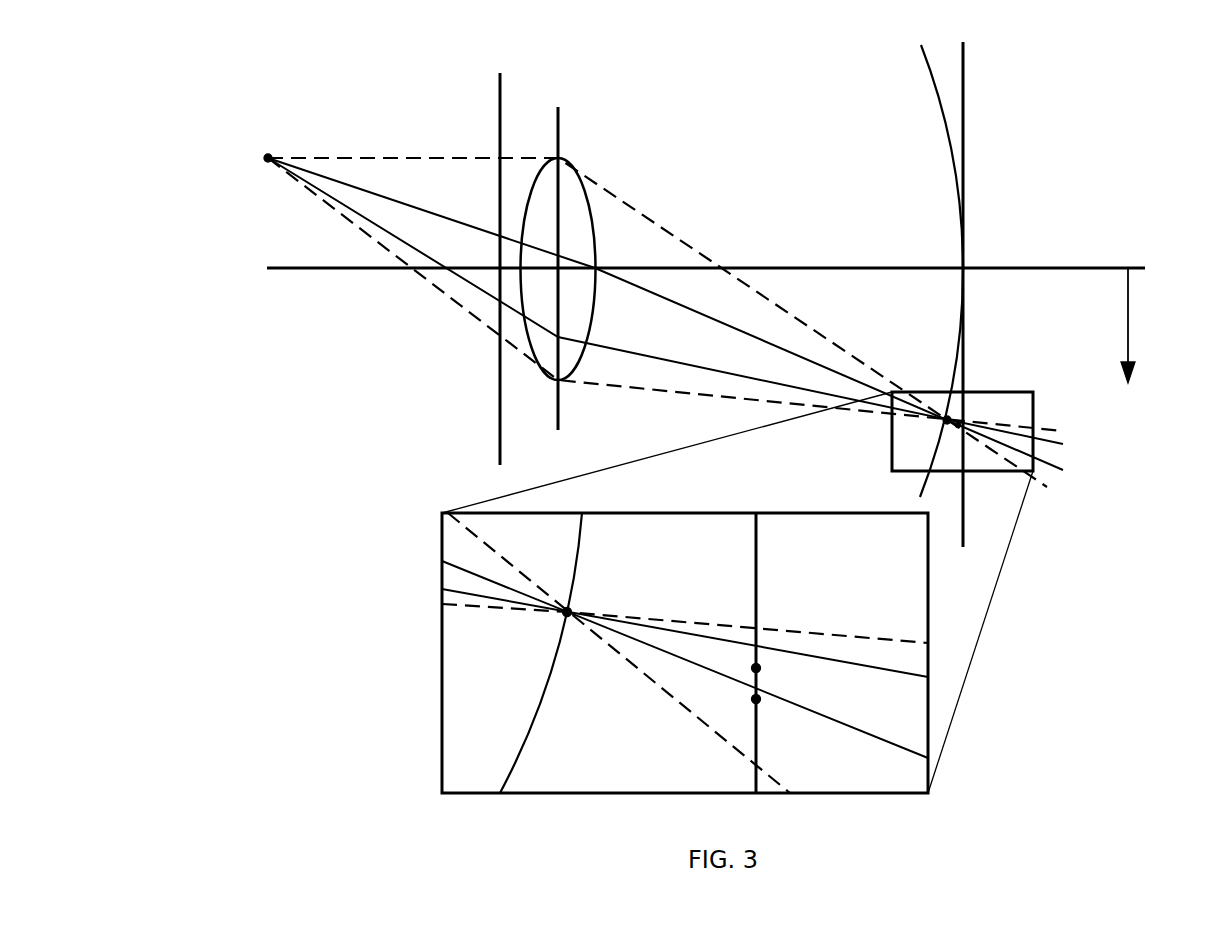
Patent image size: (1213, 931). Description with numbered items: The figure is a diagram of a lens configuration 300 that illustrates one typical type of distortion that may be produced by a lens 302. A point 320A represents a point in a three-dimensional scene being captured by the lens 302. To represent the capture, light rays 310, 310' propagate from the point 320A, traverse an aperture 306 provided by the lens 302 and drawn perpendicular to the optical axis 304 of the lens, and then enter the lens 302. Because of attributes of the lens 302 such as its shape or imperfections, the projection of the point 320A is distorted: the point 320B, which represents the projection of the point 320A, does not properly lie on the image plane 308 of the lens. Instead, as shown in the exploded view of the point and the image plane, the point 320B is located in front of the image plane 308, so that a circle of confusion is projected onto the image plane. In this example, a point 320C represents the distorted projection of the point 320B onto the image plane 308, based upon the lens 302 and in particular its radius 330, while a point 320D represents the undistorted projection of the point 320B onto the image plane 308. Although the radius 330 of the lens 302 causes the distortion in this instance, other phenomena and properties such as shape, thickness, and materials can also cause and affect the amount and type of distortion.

The lens configuration 300 is at (235, 684).
The lens 302 is at (560, 158).
The optical axis 304 is at (298, 270).
The aperture 306 is at (497, 95).
The image plane 308 is at (963, 63).
The light ray 310 is at (665, 458).
The light ray 310' is at (665, 417).
The point 320A is at (268, 155).
The point 320B is at (947, 420).
The point 320C is at (760, 668).
The point 320D is at (760, 700).
The radius 330 is at (1128, 337).